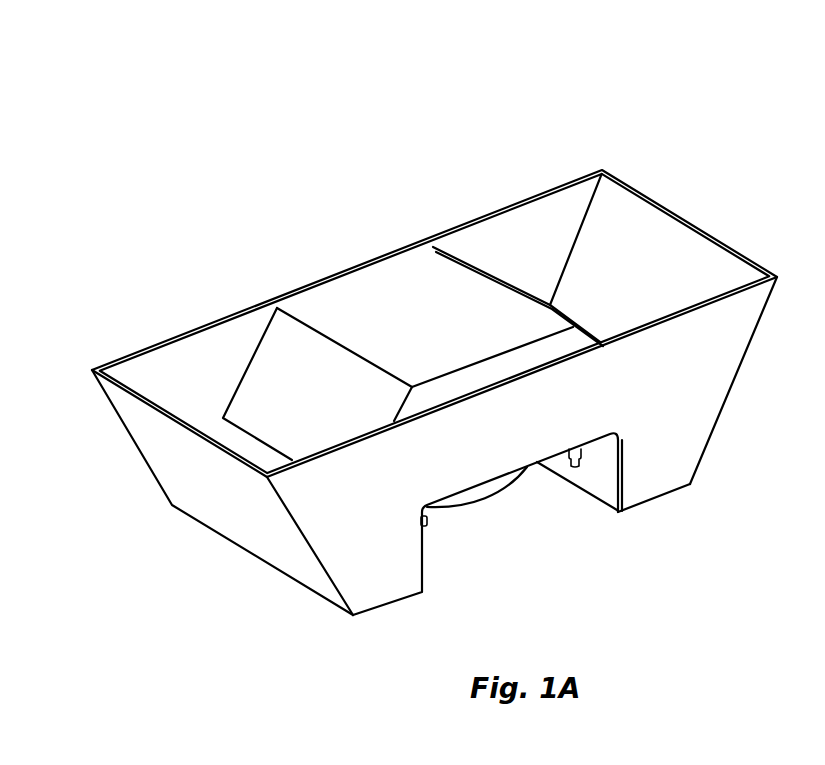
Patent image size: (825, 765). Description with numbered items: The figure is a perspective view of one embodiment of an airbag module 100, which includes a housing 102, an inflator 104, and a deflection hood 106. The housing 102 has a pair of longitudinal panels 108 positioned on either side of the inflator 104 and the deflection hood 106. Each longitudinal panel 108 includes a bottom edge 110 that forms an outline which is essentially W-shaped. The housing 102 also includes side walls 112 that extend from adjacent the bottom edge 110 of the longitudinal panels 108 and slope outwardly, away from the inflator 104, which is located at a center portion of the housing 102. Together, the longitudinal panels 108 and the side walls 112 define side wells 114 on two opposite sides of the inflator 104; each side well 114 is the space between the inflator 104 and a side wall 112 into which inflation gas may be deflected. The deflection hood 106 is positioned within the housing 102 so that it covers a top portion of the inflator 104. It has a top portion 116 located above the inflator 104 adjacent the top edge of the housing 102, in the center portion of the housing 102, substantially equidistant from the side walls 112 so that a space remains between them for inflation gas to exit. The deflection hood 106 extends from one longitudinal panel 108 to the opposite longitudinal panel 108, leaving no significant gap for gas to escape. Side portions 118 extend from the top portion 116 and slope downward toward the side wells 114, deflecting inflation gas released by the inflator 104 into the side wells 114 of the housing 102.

The airbag module 100 is at (137, 226).
The housing 102 is at (511, 190).
The inflator 104 is at (497, 488).
The deflection hood 106 is at (374, 300).
The longitudinal panels 108 is at (475, 243).
The bottom edge 110 is at (658, 500).
The side walls 112 is at (668, 237).
The side wells 114 is at (372, 592).
The top portion 116 is at (420, 363).
The side portions 118 is at (263, 375).